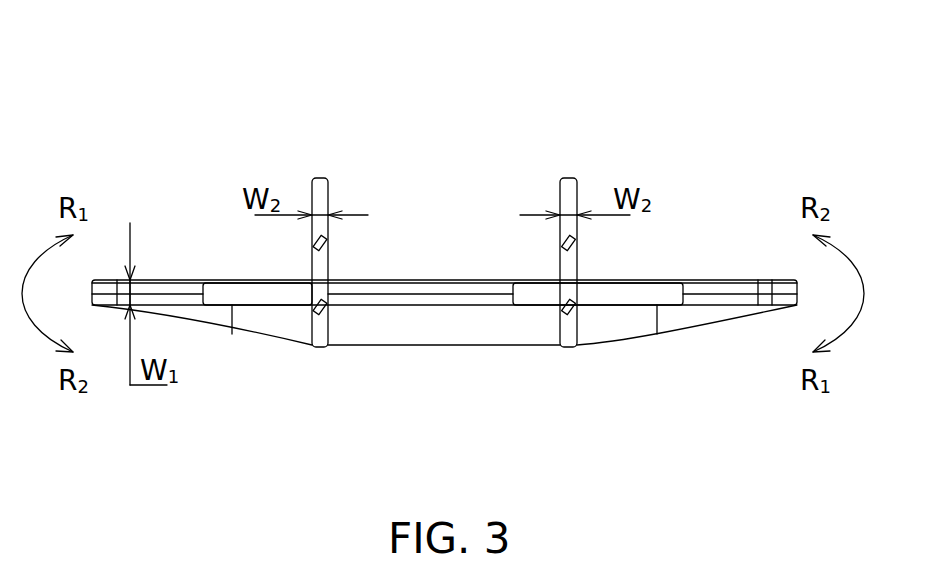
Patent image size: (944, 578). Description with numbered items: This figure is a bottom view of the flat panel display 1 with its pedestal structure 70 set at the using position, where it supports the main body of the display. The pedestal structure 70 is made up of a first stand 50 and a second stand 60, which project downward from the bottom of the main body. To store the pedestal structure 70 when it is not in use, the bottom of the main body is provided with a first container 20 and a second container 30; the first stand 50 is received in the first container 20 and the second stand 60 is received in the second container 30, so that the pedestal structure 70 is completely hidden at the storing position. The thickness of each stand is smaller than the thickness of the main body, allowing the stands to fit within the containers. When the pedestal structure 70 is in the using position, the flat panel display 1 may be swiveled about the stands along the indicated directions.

The flat panel display 1 is at (680, 118).
The first container 20 is at (632, 289).
The second container 30 is at (257, 289).
The first stand 50 is at (567, 198).
The second stand 60 is at (322, 198).
The pedestal structure 70 is at (538, 95).